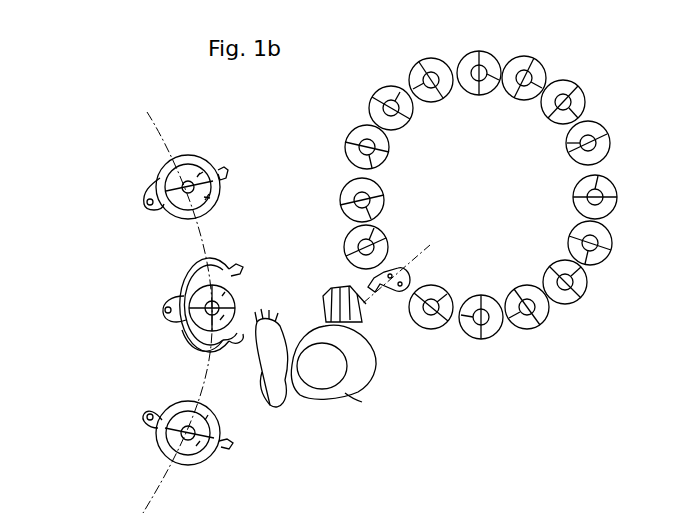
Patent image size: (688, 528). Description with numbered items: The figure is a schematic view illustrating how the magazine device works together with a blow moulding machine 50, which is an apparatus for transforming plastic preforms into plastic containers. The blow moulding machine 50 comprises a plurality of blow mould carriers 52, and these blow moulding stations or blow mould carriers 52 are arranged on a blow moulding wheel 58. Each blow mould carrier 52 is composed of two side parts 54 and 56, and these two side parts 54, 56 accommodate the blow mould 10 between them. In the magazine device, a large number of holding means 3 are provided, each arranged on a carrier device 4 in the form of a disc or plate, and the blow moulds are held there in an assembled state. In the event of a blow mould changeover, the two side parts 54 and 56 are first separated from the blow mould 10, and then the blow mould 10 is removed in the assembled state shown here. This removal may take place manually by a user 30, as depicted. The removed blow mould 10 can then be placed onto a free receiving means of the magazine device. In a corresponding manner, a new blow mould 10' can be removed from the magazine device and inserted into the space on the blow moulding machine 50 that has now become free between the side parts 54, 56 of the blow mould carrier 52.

The blow moulding machine 50 is at (95, 183).
The blow mould carrier 52 is at (130, 420).
The side part 54 is at (180, 281).
The side part 56 is at (195, 351).
The blow moulding wheel 58 is at (69, 471).
The blow mould 10 is at (235, 272).
The new blow mould 10' is at (422, 227).
The holding means 3 is at (395, 262).
The carrier device 4 is at (409, 196).
The user 30 is at (320, 375).